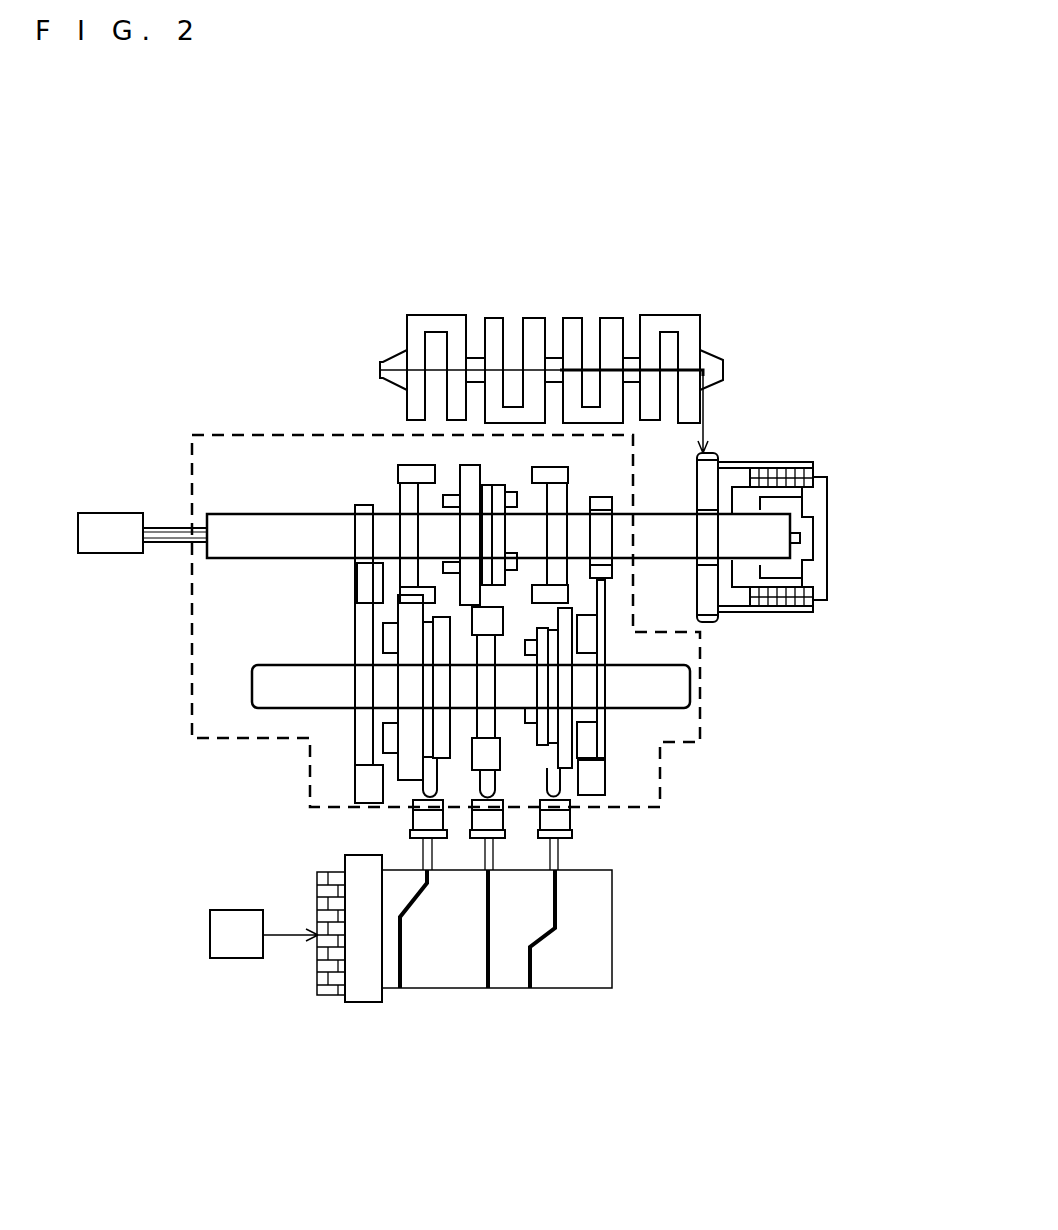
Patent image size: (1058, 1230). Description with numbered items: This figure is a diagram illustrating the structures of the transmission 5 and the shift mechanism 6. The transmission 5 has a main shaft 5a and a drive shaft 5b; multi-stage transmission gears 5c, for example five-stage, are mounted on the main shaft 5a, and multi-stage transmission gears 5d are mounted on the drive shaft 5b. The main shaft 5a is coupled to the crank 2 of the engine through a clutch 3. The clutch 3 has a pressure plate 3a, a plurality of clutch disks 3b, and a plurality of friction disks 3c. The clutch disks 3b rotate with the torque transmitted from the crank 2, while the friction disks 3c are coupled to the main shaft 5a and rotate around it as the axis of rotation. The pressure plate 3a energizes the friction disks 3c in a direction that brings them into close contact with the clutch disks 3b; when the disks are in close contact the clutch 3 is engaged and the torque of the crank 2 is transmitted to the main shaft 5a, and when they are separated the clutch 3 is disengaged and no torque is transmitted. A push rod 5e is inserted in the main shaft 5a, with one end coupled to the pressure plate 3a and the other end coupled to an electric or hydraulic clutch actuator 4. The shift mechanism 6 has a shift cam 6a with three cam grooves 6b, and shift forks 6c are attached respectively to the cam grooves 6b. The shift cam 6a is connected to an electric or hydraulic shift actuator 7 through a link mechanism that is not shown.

The crank 2 is at (690, 320).
The clutch 3 is at (803, 514).
The pressure plate 3a is at (826, 548).
The clutch disks 3b is at (750, 470).
The friction disks 3c is at (805, 468).
The clutch actuator 4 is at (117, 523).
The transmission 5 is at (192, 710).
The main shaft 5a is at (277, 556).
The drive shaft 5b is at (302, 665).
The transmission gears 5c is at (378, 462).
The transmission gears 5d is at (622, 752).
The push rod 5e is at (167, 535).
The shift mechanism 6 is at (481, 970).
The shift cam 6a is at (362, 995).
The cam grooves 6b is at (405, 990).
The shift forks 6c is at (430, 860).
The shift actuator 7 is at (237, 918).